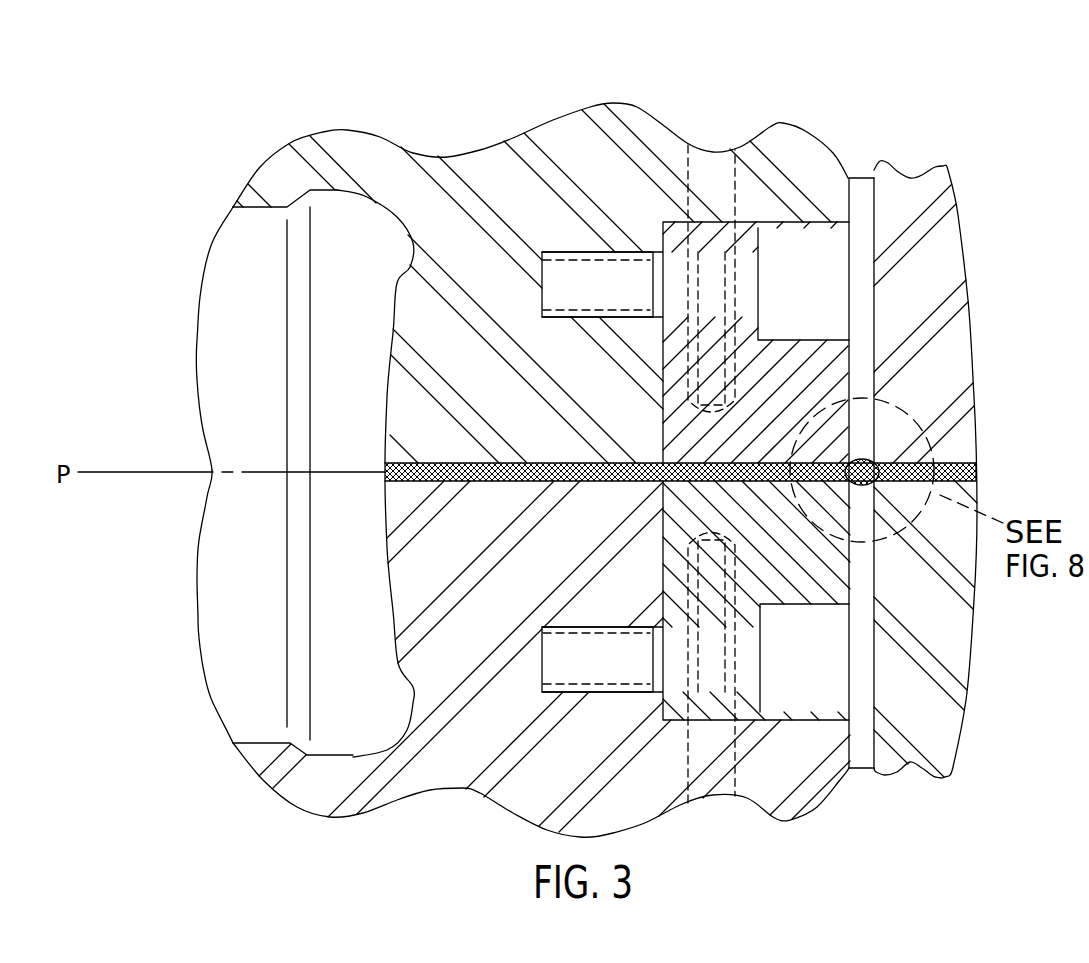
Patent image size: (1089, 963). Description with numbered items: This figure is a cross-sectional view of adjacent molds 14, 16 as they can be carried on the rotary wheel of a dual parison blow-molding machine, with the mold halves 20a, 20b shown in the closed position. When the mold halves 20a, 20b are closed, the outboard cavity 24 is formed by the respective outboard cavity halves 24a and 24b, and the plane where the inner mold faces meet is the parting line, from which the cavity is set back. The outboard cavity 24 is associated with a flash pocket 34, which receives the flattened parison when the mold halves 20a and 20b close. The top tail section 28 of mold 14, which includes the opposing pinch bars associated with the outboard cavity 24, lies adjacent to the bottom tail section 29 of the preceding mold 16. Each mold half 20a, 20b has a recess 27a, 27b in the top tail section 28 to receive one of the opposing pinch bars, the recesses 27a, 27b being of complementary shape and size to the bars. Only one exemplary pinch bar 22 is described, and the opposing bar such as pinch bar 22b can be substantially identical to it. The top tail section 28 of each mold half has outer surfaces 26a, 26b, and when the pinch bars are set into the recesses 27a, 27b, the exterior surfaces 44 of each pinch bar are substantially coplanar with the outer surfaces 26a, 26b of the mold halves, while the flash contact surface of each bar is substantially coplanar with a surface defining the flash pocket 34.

The mold 14 is at (259, 83).
The preceding mold 16 is at (1000, 222).
The mold half 20a is at (561, 132).
The mold half 20b is at (655, 800).
The pinch bar 22 is at (838, 370).
The pinch bar 22b is at (840, 583).
The outboard cavity 24 is at (264, 226).
The outboard cavity half 24a is at (210, 298).
The outboard cavity half 24b is at (210, 637).
The outer surface 26a is at (850, 183).
The outer surface 26b is at (853, 770).
The recess 27a is at (670, 208).
The recess 27b is at (645, 706).
The top tail section 28 is at (856, 154).
The bottom tail section 29 is at (912, 154).
The flash pocket 34 is at (438, 462).
The exterior surface 44 is at (852, 386).